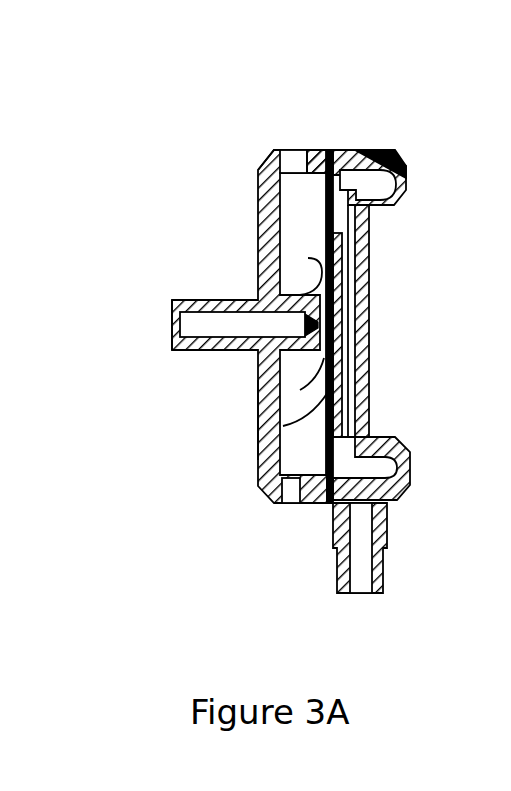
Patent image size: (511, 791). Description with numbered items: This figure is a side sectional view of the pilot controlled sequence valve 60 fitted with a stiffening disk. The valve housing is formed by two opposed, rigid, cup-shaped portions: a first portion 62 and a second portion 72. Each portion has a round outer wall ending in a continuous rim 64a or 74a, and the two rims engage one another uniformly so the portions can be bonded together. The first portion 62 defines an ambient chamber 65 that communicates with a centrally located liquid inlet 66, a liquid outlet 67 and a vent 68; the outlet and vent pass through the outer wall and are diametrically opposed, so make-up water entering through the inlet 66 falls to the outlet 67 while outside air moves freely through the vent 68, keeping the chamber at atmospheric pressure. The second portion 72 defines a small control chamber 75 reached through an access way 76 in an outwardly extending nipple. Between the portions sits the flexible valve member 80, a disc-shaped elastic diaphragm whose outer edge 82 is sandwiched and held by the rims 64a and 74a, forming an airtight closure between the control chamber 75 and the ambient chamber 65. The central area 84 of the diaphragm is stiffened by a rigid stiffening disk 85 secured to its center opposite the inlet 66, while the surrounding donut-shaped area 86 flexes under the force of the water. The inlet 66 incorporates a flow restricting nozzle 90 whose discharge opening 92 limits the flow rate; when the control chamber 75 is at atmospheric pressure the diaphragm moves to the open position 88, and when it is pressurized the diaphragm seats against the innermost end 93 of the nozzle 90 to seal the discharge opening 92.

The pilot controlled sequence valve 60 is at (408, 138).
The first cup-shaped portion 62 is at (271, 319).
The rim of first outer wall 64a is at (300, 160).
The chamber 65 is at (315, 228).
The liquid inlet 66 is at (220, 350).
The liquid outlet 67 is at (292, 500).
The vent 68 is at (290, 150).
The second cup-shaped portion 72 is at (406, 132).
The rim of second outer wall 74a is at (318, 158).
The control chamber 75 is at (366, 185).
The access way 76 is at (360, 578).
The flexible valve member 80 is at (327, 450).
The outer edge 82 is at (373, 145).
The central area 84 is at (302, 406).
The stiffening disk 85 is at (342, 268).
The donut-shaped area 86 is at (366, 224).
The open position 88 is at (262, 423).
The flow restricting mechanism 90 is at (322, 300).
The discharge opening 92 is at (300, 324).
The innermost end 93 is at (300, 373).